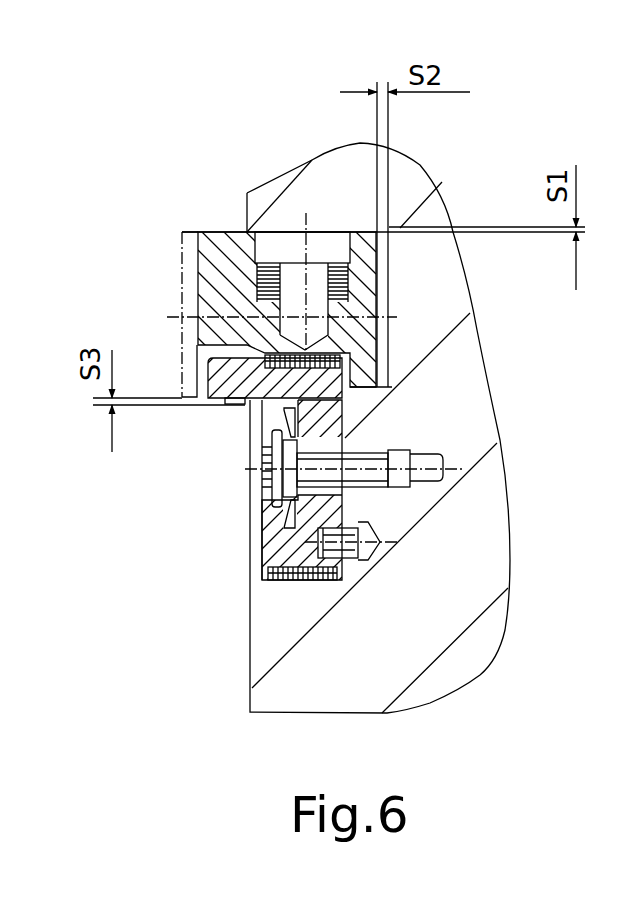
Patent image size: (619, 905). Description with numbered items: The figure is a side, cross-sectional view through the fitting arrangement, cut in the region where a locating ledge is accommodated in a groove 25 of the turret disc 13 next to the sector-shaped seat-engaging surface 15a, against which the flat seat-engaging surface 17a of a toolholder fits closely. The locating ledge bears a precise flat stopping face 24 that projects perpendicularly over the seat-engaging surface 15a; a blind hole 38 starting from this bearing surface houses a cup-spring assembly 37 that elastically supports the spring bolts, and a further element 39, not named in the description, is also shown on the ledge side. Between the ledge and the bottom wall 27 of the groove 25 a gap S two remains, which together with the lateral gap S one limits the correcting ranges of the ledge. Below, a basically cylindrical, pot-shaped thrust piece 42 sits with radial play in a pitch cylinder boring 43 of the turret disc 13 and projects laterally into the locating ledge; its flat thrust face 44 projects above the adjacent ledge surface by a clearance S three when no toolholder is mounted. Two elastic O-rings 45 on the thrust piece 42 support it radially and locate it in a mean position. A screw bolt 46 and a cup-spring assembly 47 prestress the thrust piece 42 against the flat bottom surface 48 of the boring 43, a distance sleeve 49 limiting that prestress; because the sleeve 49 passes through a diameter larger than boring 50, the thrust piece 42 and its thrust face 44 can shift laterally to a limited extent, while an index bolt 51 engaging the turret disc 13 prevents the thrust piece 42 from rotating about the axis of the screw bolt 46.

The turret disc 13 is at (477, 422).
The seat-engaging surface 15a is at (247, 195).
The seat-engaging surface 17a is at (250, 590).
The stopping face 24 is at (215, 235).
The groove 25 is at (396, 215).
The bottom wall 27 is at (390, 300).
The cup-spring assembly 37 is at (388, 283).
The blind hole 38 is at (260, 282).
The bracket 39 is at (183, 350).
The thrust piece 42 is at (330, 410).
The pitch cylinder boring 43 is at (343, 577).
The thrust face 44 is at (227, 402).
The O-rings 45 is at (325, 583).
The screw bolt 46 is at (280, 503).
The cup-spring assembly 47 is at (262, 535).
The bottom surface 48 is at (347, 505).
The distance sleeve 49 is at (265, 470).
The boring 50 is at (345, 365).
The index bolt 51 is at (358, 560).